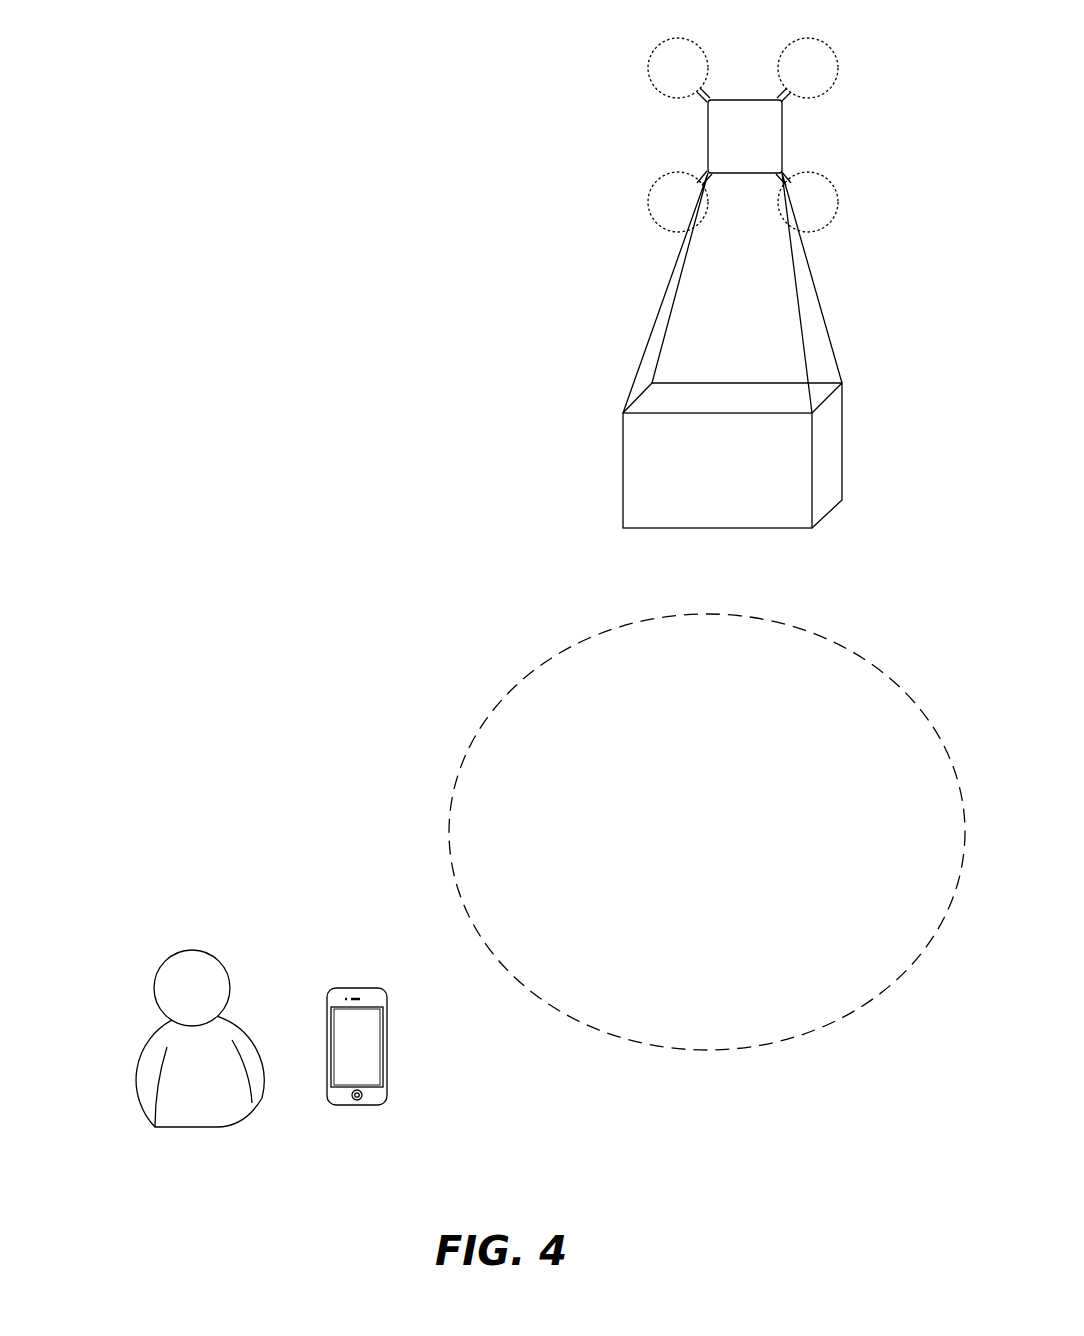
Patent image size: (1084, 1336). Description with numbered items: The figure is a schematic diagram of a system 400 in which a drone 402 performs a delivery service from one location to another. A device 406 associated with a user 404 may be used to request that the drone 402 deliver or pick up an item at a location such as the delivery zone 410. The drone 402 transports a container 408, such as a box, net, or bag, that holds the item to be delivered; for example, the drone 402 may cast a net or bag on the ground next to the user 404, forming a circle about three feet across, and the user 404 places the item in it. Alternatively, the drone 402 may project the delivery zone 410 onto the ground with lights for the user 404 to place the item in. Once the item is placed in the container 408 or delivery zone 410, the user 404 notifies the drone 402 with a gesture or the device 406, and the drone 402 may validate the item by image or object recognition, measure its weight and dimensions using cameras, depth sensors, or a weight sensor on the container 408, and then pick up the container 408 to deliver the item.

The system 400 is at (122, 73).
The drone 402 is at (743, 135).
The user 404 is at (167, 962).
The device 406 is at (352, 1105).
The container 408 is at (623, 528).
The delivery zone 410 is at (513, 690).